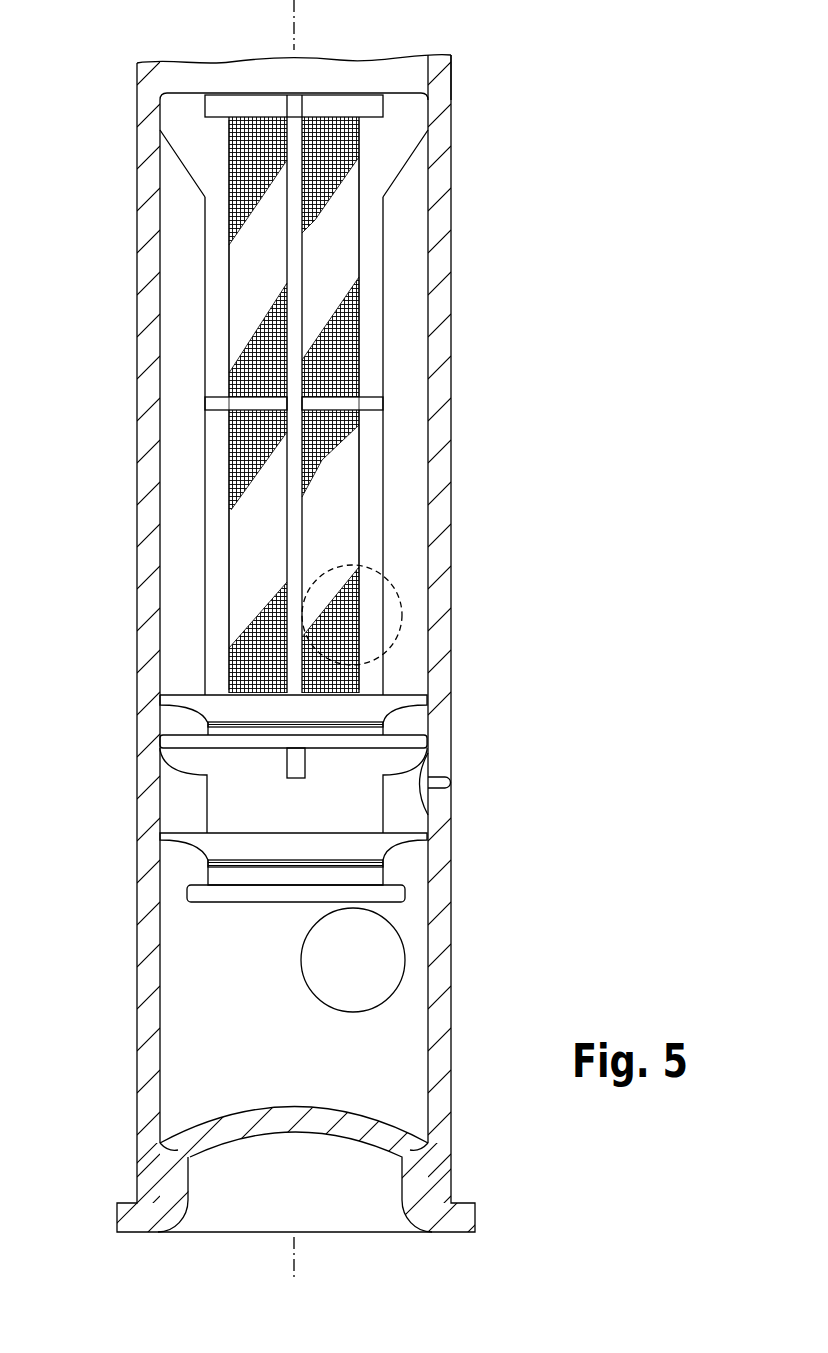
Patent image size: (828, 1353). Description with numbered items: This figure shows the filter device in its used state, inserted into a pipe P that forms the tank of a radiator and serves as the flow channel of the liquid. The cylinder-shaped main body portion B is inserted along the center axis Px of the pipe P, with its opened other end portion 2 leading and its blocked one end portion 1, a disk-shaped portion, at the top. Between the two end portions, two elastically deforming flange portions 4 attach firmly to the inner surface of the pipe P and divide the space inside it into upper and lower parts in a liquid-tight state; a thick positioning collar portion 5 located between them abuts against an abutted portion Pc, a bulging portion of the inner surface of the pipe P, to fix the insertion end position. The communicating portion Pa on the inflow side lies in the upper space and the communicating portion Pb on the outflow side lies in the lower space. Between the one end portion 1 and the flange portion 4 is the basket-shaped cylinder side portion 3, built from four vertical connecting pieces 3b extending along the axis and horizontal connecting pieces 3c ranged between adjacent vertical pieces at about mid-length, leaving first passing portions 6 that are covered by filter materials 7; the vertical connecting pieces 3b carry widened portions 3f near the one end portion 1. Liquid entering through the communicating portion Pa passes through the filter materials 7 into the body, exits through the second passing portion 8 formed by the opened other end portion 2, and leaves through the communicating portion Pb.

The one end portion of the cylinder 1 is at (340, 93).
The other end portion of the cylinder 2 is at (220, 903).
The cylinder side portion 3 is at (238, 328).
The vertical connecting piece 3b is at (221, 516).
The horizontal connecting piece 3c is at (250, 410).
The widened portion 3f is at (160, 106).
The flange portion 4 is at (427, 702).
The positioning collar portion 5 is at (427, 740).
The first passing portion 6 is at (248, 261).
The filter material 7 is at (240, 230).
The second passing portion 8 is at (285, 903).
The main body portion B is at (383, 320).
The pipe P is at (451, 433).
The communicating portion on the inflow side Pa is at (400, 622).
The communicating portion on the outflow side Pb is at (393, 953).
The abutted portion Pc is at (452, 778).
The center axis of the pipe Px is at (294, 654).